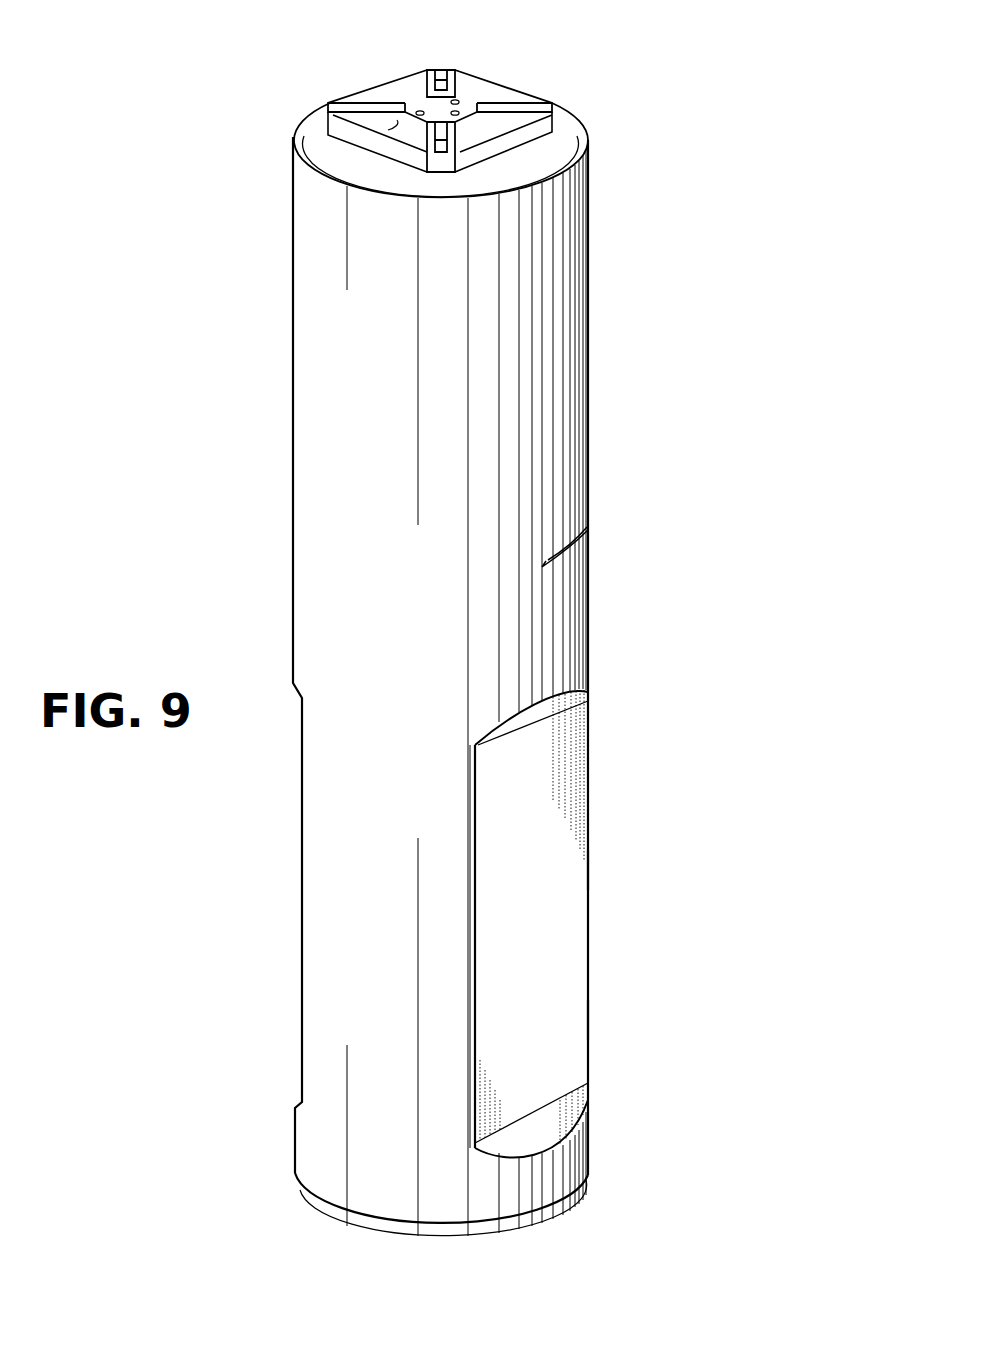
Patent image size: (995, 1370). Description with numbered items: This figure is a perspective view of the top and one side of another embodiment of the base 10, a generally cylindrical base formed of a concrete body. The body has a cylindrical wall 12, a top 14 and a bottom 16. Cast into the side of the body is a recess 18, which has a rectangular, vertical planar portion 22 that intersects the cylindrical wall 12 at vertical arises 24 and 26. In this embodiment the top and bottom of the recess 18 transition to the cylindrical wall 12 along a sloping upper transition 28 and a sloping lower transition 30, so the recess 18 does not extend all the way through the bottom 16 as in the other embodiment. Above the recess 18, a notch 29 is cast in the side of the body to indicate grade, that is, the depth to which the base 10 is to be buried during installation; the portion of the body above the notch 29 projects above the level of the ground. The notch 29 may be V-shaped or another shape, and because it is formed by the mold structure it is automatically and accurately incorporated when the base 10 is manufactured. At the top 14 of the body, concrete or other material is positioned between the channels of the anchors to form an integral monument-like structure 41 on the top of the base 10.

The base 10 is at (426, 633).
The cylindrical wall 12 is at (540, 357).
The top 14 is at (538, 93).
The bottom 16 is at (540, 1220).
The recess 18 is at (590, 1023).
The vertical planar portion 22 is at (456, 924).
The vertical arise 24 is at (470, 893).
The vertical arise 26 is at (590, 870).
The upper transition 28 is at (562, 703).
The notch 29 is at (585, 553).
The lower transition 30 is at (562, 1112).
The monument-like structure 41 is at (397, 120).